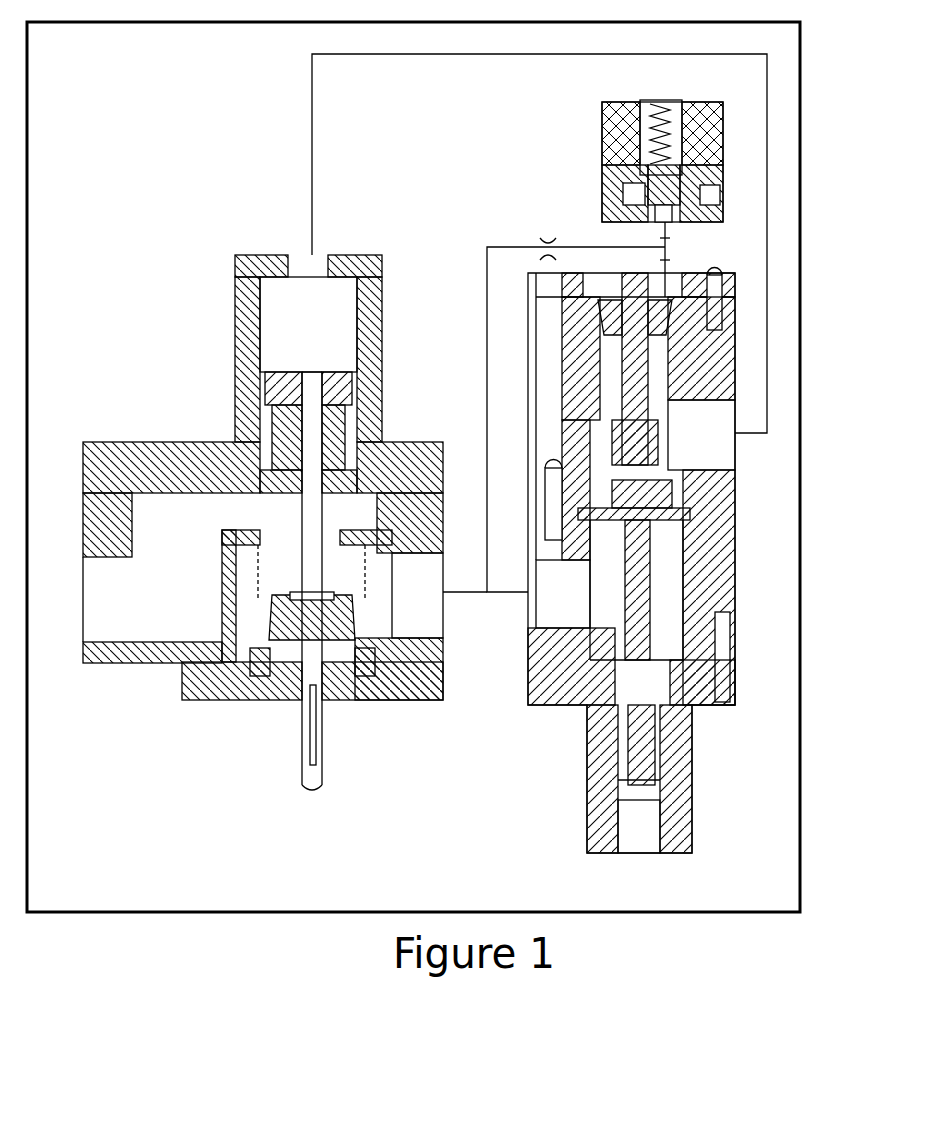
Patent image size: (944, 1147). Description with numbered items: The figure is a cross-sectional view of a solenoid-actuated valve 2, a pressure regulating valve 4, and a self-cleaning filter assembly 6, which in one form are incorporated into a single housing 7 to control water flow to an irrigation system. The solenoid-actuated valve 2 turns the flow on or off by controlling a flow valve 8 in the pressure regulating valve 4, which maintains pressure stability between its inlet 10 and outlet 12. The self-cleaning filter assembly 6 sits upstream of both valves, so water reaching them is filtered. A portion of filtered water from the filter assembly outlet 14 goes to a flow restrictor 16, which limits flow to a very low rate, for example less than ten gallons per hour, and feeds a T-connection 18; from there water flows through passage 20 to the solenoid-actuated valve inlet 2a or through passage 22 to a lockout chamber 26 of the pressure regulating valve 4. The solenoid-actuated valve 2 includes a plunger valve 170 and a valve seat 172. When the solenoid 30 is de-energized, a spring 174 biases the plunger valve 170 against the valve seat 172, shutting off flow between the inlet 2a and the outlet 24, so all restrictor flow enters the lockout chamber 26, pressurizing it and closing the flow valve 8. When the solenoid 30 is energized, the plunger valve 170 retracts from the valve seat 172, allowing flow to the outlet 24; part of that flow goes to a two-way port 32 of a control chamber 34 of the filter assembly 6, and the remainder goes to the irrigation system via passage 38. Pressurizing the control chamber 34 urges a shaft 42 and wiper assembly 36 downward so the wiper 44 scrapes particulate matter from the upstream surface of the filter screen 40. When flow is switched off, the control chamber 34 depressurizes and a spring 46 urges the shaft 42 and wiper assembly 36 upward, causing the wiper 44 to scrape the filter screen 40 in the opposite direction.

The solenoid-actuated valve 2 is at (727, 127).
The solenoid-actuated valve inlet 2a is at (603, 177).
The pressure regulating valve 4 is at (748, 683).
The self-cleaning filter assembly 6 is at (224, 250).
The housing 7 is at (802, 606).
The flow valve 8 is at (660, 492).
The inlet 10 is at (565, 590).
The outlet 12 is at (723, 438).
The filter assembly outlet 14 is at (420, 607).
The flow restrictor 16 is at (536, 236).
The T-connection 18 is at (665, 238).
The passage 20 is at (665, 238).
The passage 22 is at (665, 260).
The outlet 24 is at (712, 195).
The lockout chamber 26 is at (660, 355).
The solenoid 30 is at (600, 103).
The two-way port 32 is at (292, 262).
The control chamber 34 is at (283, 330).
The wiper assembly 36 is at (365, 658).
The passage 38 is at (770, 297).
The filter screen 40 is at (258, 590).
The shaft 42 is at (309, 777).
The wiper 44 is at (262, 620).
The spring 46 is at (258, 436).
The plunger valve 170 is at (680, 185).
The valve seat 172 is at (672, 212).
The spring 174 is at (708, 102).